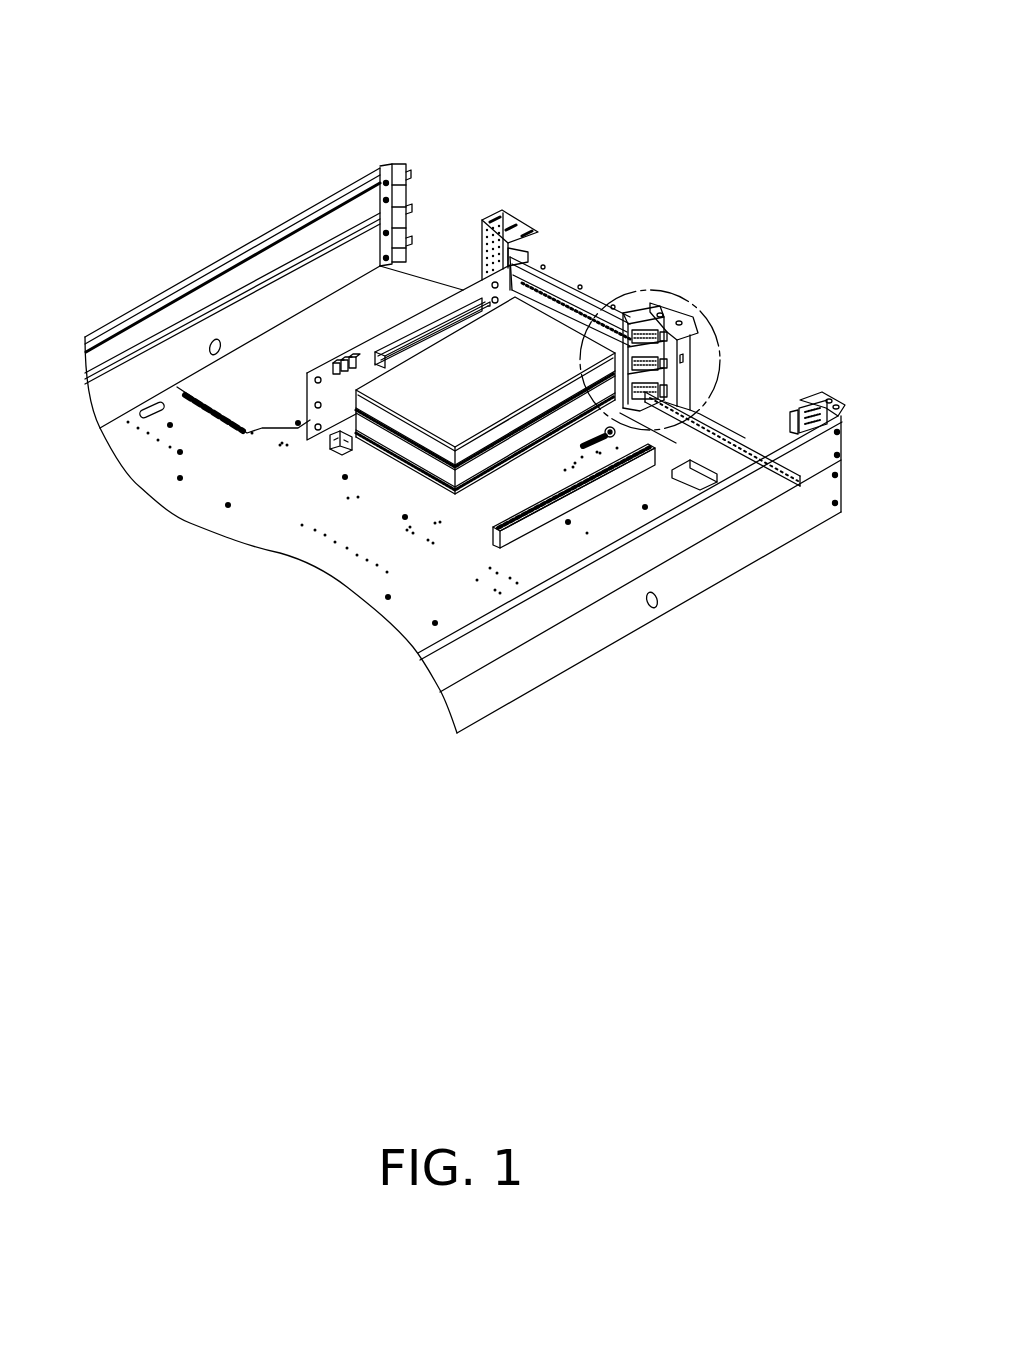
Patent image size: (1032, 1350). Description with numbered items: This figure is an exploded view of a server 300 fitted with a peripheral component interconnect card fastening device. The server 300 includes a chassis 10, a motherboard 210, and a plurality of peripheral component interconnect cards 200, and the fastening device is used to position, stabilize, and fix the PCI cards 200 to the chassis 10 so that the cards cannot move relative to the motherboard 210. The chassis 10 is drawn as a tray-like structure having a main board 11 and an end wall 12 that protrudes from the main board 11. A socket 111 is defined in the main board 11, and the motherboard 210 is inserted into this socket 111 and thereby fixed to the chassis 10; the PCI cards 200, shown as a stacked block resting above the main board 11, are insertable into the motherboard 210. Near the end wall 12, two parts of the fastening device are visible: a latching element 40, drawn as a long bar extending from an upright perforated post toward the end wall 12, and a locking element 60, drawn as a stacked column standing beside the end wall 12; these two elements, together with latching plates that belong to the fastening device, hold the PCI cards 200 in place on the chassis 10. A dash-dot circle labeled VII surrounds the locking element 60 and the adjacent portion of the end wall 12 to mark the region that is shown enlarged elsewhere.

The server 300 is at (465, 368).
The chassis 10 is at (740, 547).
The main board 11 is at (672, 490).
The end wall 12 is at (670, 327).
The latching element 40 is at (563, 278).
The locking element 60 is at (640, 318).
The peripheral component interconnect card 200 is at (440, 460).
The motherboard 210 is at (308, 410).
The socket 111 is at (340, 450).
The detail view VII region VII is at (722, 358).